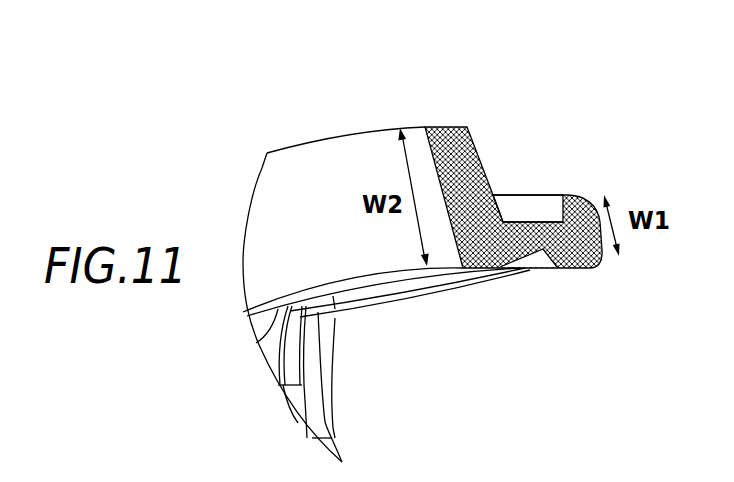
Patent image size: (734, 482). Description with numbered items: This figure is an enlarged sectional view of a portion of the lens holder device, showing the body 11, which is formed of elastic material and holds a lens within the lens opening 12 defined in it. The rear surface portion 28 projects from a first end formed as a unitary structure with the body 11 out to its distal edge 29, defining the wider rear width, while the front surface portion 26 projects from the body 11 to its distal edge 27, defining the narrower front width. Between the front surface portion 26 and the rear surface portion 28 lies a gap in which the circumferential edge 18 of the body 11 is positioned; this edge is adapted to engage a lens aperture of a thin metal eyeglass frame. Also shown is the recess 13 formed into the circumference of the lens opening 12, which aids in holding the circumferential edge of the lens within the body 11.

The body 11 is at (595, 270).
The lens holding opening 12 is at (313, 323).
The recess 13 is at (533, 262).
The circumferential edge 18 is at (510, 222).
The front surface portion 26 is at (590, 210).
The distal edge 27 is at (568, 195).
The rear surface portion 28 is at (312, 167).
The distal edge 29 is at (447, 127).